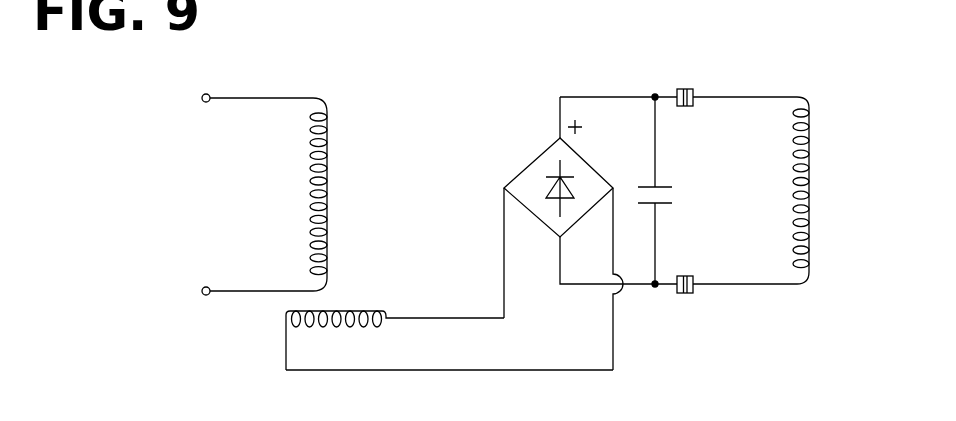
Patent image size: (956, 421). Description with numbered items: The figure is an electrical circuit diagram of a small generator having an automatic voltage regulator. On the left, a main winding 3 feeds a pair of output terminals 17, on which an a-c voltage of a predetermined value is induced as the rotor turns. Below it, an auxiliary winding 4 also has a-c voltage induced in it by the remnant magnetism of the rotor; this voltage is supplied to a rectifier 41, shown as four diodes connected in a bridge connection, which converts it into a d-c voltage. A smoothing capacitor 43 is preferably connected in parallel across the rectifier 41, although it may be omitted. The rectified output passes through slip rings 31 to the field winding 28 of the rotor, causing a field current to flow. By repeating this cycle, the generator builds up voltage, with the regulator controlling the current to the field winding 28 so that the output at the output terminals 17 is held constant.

The output terminals 17 is at (208, 94).
The main winding 3 is at (330, 121).
The auxiliary winding 4 is at (338, 309).
The rectifier 41 is at (521, 170).
The smoothing capacitor 43 is at (673, 187).
The slip ring 31 is at (684, 88).
The field winding 28 is at (811, 135).